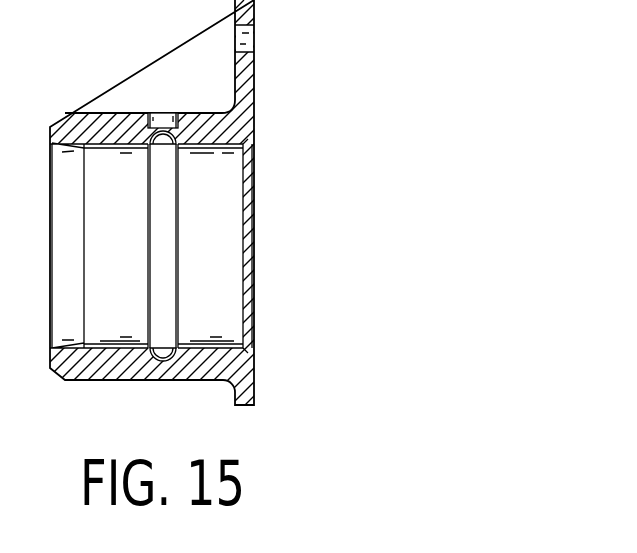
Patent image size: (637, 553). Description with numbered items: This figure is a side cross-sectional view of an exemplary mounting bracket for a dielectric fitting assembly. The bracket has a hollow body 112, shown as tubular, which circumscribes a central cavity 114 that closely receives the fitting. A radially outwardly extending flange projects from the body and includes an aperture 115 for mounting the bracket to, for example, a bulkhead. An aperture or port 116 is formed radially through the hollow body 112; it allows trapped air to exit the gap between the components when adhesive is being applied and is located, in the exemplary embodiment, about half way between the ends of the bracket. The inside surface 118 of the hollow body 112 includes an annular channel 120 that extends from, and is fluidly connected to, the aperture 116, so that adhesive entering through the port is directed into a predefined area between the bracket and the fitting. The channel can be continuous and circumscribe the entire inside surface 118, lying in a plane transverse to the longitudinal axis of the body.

The hollow body 112 is at (117, 113).
The central cavity 114 is at (212, 230).
The aperture 115 is at (250, 37).
The aperture or port 116 is at (162, 113).
The inside surface 118 is at (219, 147).
The annular channel 120 is at (172, 362).